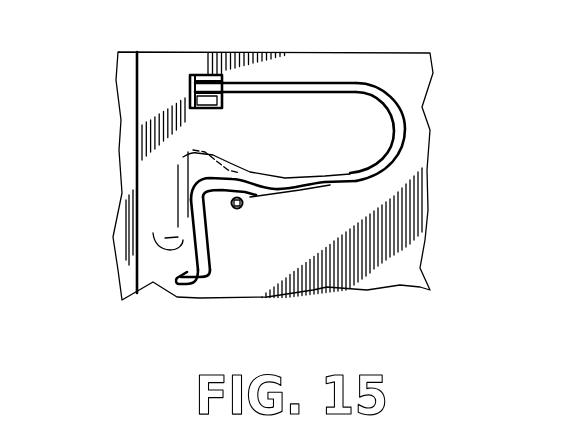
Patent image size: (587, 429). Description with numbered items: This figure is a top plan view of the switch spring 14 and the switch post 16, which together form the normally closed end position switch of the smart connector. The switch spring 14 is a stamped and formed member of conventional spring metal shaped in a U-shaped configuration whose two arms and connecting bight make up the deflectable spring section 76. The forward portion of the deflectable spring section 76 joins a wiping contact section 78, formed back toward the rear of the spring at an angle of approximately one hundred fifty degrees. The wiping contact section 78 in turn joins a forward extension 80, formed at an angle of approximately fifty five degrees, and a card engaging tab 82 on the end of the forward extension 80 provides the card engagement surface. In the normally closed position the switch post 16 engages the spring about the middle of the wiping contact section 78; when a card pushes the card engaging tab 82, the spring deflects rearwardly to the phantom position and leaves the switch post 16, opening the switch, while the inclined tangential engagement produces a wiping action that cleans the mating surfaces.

The switch spring 14 is at (273, 177).
The switch post 16 is at (246, 207).
The deflectable spring section 76 is at (405, 130).
The wiping contact section 78 is at (216, 198).
The forward extension 80 is at (193, 213).
The card engaging tab 82 is at (177, 297).